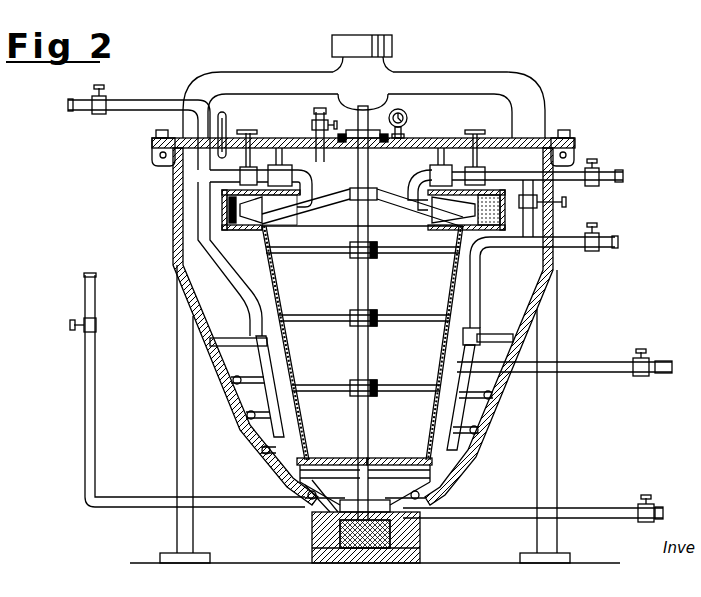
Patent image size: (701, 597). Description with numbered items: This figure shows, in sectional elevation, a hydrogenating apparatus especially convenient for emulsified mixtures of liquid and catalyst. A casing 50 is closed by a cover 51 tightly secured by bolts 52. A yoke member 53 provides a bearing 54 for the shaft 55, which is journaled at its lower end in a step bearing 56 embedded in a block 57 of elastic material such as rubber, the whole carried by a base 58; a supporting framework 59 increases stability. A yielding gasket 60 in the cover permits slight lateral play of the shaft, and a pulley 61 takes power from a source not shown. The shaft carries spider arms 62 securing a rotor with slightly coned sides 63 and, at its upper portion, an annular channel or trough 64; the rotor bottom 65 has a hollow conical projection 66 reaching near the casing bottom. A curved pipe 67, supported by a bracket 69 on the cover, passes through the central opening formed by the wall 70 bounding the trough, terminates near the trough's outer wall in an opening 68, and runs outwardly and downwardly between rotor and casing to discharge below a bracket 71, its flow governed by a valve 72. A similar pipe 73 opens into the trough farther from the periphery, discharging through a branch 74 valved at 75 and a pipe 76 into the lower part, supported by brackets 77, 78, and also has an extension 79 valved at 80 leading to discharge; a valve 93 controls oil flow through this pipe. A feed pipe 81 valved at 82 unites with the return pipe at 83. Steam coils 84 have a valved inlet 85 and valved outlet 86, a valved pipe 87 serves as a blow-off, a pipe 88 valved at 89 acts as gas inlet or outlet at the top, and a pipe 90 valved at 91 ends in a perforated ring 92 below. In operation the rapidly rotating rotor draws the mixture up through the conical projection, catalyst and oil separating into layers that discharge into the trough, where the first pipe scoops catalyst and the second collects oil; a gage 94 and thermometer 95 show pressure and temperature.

The casing 50 is at (173, 253).
The cover 51 is at (500, 138).
The bolts 52 is at (150, 140).
The yoke member 53 is at (364, 105).
The bearing 54 is at (341, 70).
The shaft 55 is at (369, 166).
The step bearing 56 is at (360, 565).
The block of elastic material 57 is at (420, 538).
The base 58 is at (420, 555).
The supporting framework 59 is at (177, 388).
The yielding gasket 60 is at (357, 134).
The pulley 61 is at (372, 40).
The spider arms 62 is at (428, 252).
The coned sides 63 is at (276, 285).
The annular channel or trough 64 is at (248, 231).
The bottom 65 is at (322, 458).
The hollow conical projection 66 is at (388, 458).
The curved pipe 67 is at (308, 190).
The opening 68 is at (228, 209).
The bracket 69 is at (285, 176).
The wall 70 is at (444, 207).
The bracket 71 is at (228, 338).
The valve 72 is at (250, 132).
The pipe 73 is at (422, 185).
The branch 74 is at (538, 200).
The valve 75 is at (567, 203).
The pipe 76 is at (481, 293).
The bracket 77 is at (441, 160).
The bracket 78 is at (492, 338).
The extension 79 is at (575, 170).
The valve 80 is at (600, 172).
The feed pipe 81 is at (614, 242).
The valve 82 is at (598, 230).
The junction 83 is at (527, 240).
The steam coils 84 is at (492, 411).
The valved inlet 85 is at (622, 368).
The valved outlet 86 is at (618, 508).
The valved pipe 87 is at (314, 128).
The pipe 88 is at (160, 100).
The valve 89 is at (100, 94).
The pipe 90 is at (96, 345).
The valve 91 is at (96, 325).
The perforated ring 92 is at (310, 506).
The valve 93 is at (478, 132).
The gage 94 is at (407, 114).
The thermometer 95 is at (224, 118).